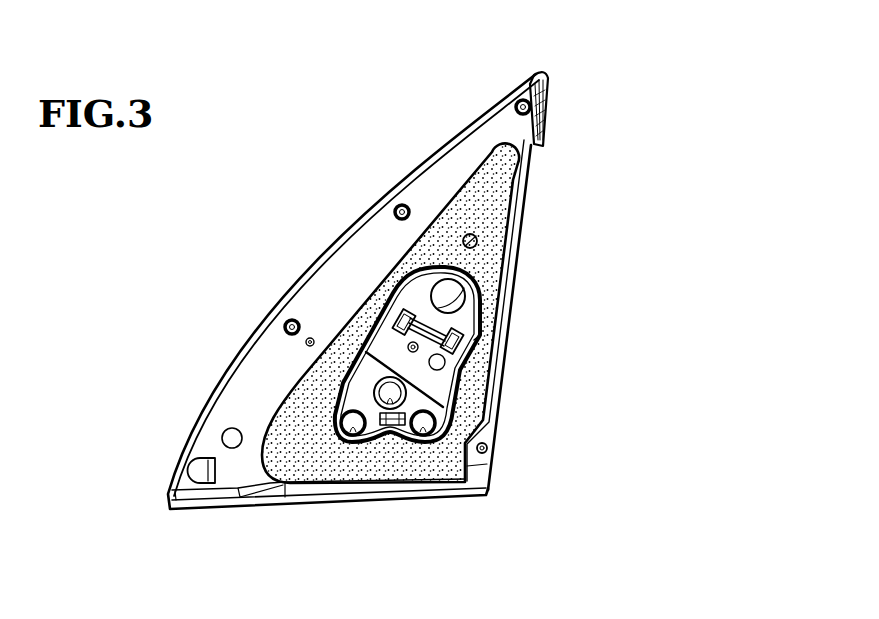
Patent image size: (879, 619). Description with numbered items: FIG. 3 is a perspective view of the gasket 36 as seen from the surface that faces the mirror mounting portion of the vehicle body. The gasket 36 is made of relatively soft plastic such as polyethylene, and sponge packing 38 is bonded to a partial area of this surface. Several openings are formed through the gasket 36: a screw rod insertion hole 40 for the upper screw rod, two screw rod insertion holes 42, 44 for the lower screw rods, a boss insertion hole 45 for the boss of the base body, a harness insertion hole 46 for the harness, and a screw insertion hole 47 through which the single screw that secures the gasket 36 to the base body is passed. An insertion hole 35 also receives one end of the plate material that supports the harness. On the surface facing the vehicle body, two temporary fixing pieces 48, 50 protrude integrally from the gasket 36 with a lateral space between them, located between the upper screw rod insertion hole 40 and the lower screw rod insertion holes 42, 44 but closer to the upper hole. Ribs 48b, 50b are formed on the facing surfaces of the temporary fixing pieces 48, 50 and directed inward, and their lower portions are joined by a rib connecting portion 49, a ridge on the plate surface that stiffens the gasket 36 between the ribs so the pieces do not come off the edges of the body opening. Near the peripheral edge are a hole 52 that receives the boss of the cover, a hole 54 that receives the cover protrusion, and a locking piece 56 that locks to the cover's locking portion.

The gasket 36 is at (619, 110).
The foam pad 38 is at (496, 184).
The screw rod insertion hole 40 is at (465, 292).
The screw rod insertion hole 42 is at (362, 440).
The screw rod insertion hole 44 is at (434, 440).
The boss insertion hole 45 is at (478, 236).
The harness insertion hole 46 is at (400, 412).
The screw insertion hole 47 is at (470, 363).
The temporary fixing piece 48 is at (399, 316).
The rib 48b is at (398, 340).
The rib connecting portion 49 is at (440, 326).
The temporary fixing piece 50 is at (458, 345).
The rib 50b is at (478, 351).
The hole 52 is at (521, 98).
The hole 54 is at (490, 449).
The locking piece 56 is at (205, 471).
The insertion hole 35 is at (392, 428).